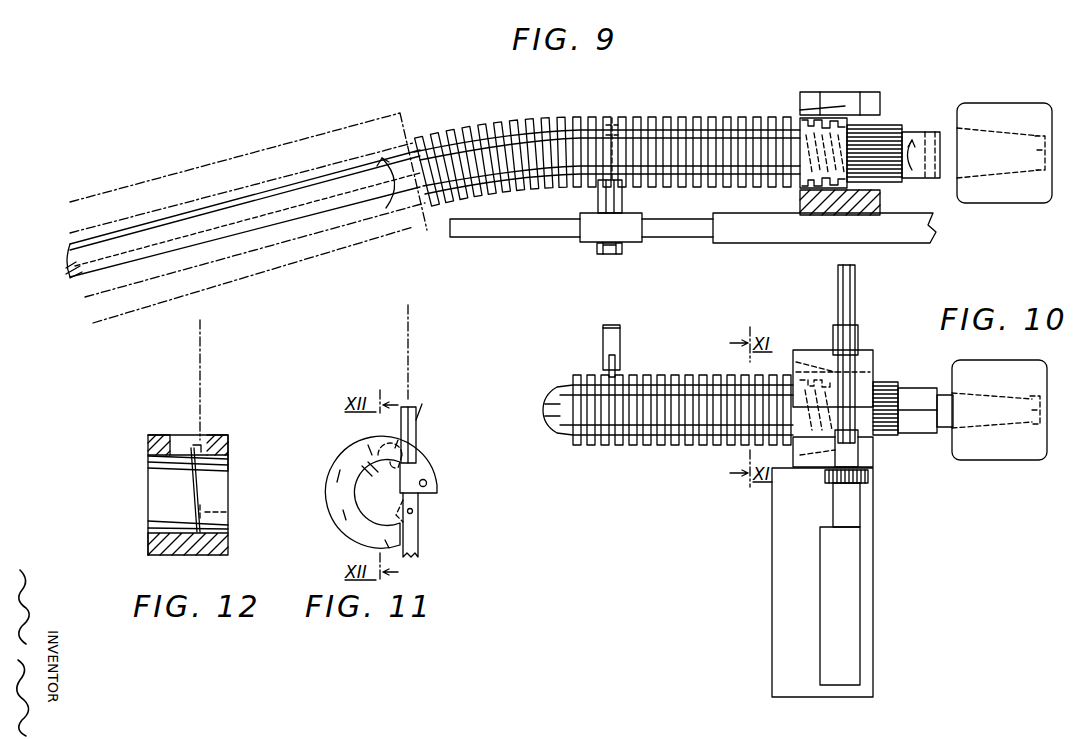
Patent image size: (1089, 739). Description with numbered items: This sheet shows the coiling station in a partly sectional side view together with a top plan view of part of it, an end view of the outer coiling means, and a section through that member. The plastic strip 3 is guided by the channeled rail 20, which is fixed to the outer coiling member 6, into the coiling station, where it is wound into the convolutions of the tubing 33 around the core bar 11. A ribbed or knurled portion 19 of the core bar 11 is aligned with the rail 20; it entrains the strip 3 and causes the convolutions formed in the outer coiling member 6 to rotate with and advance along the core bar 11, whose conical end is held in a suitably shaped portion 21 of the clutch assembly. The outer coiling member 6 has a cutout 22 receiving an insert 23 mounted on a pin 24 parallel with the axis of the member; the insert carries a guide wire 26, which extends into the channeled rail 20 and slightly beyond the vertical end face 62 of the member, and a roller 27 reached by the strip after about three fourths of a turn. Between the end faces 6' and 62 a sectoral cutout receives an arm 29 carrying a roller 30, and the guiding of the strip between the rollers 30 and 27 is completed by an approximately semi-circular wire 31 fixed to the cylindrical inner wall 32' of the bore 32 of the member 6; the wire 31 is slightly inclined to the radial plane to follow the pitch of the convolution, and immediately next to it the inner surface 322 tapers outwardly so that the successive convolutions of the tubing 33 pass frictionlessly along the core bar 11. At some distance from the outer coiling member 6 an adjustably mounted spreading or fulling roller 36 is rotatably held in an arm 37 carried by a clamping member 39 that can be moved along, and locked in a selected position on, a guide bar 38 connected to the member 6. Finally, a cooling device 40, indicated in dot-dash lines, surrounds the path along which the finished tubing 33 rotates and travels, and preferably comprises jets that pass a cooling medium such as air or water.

In FIG. 9, the cooling device 40 is at (254, 157).
In FIG. 9, the tubing 33 is at (732, 119).
In FIG. 10, the tubing 33 is at (737, 446).
In FIG. 9, the spreading or fulling roller 36 is at (619, 118).
In FIG. 10, the spreading or fulling roller 36 is at (608, 372).
In FIG. 9, the arm 37 is at (623, 198).
In FIG. 10, the arm 37 is at (621, 338).
In FIG. 9, the guide bar 38 is at (661, 238).
In FIG. 9, the clamping member 39 is at (590, 243).
In FIG. 9, the insert 23 is at (838, 92).
In FIG. 9, the vertical end face 62 is at (876, 102).
In FIG. 9, the ribbed or knurled portion 19 is at (887, 129).
In FIG. 10, the ribbed or knurled portion 19 is at (885, 388).
In FIG. 9, the outer coiling member 6 is at (854, 199).
In FIG. 11, the outer coiling member 6 is at (366, 492).
In FIG. 10, the strip 3 is at (859, 354).
In FIG. 10, the channeled rail 20 is at (833, 342).
In FIG. 11, the channeled rail 20 is at (412, 407).
In FIG. 10, the guide wire 26 is at (857, 340).
In FIG. 10, the core bar 11 is at (911, 388).
In FIG. 10, the shaped portion of clutch assembly 21 is at (985, 373).
In FIG. 10, the roller 30 is at (862, 441).
In FIG. 11, the roller 30 is at (421, 509).
In FIG. 12, the roller 30 is at (206, 514).
In FIG. 10, the end face 6' is at (839, 567).
In FIG. 11, the semi-circular wire 31 is at (362, 466).
In FIG. 12, the semi-circular wire 31 is at (190, 481).
In FIG. 11, the roller 27 is at (390, 472).
In FIG. 12, the roller 27 is at (205, 442).
In FIG. 11, the pin or axle 24 is at (428, 484).
In FIG. 11, the arm 29 is at (420, 544).
In FIG. 12, the cutout 22 is at (182, 420).
In FIG. 12, the cylindrical opening or bore 32 is at (188, 495).
In FIG. 12, the cylindrical inner wall 32' is at (248, 464).
In FIG. 12, the inner surface 322 is at (157, 540).